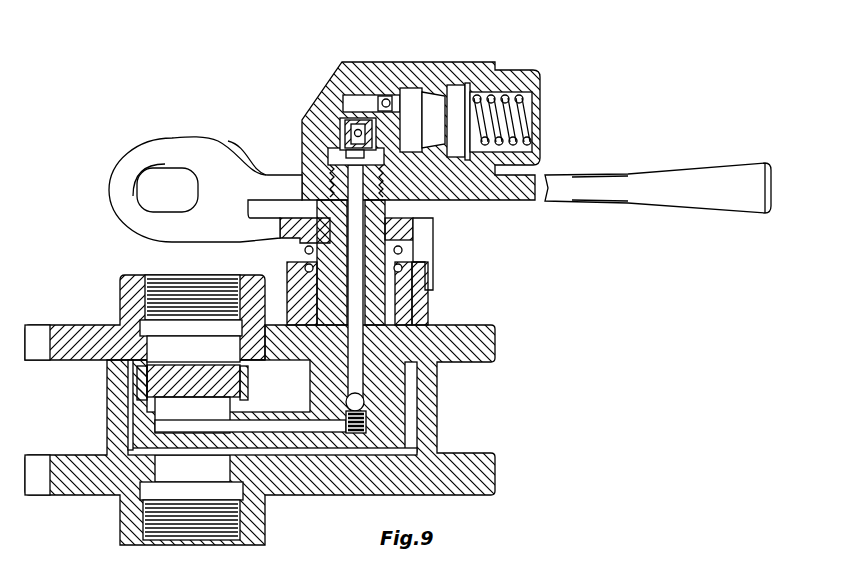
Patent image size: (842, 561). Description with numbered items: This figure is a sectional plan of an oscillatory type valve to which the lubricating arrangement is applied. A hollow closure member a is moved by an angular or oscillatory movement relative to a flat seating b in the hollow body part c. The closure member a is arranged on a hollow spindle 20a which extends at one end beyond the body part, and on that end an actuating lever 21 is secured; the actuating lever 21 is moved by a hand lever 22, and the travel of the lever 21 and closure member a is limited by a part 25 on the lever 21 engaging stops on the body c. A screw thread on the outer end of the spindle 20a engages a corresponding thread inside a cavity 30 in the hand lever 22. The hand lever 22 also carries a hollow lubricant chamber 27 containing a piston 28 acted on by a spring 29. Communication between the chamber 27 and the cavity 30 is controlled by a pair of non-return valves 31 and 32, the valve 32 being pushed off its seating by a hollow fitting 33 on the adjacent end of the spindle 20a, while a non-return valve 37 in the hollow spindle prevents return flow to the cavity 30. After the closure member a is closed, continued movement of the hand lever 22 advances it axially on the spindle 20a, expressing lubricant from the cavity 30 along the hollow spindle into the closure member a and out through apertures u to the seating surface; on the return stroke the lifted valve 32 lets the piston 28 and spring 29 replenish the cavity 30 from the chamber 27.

The hollow spindle 20a is at (380, 337).
The actuating lever 21 is at (240, 232).
The hand lever 22 is at (580, 196).
The part 25 is at (430, 233).
The lubricant chamber 27 is at (410, 88).
The piston 28 is at (447, 90).
The spring 29 is at (525, 100).
The cavity 30 is at (347, 152).
The non-return valve 31 is at (385, 95).
The non-return valve 32 is at (345, 130).
The hollow fitting 33 is at (350, 163).
The non-return valve 37 is at (362, 406).
The hollow closure member a is at (246, 393).
The flat seating b is at (236, 370).
The hollow body part c is at (437, 415).
The apertures u is at (149, 370).